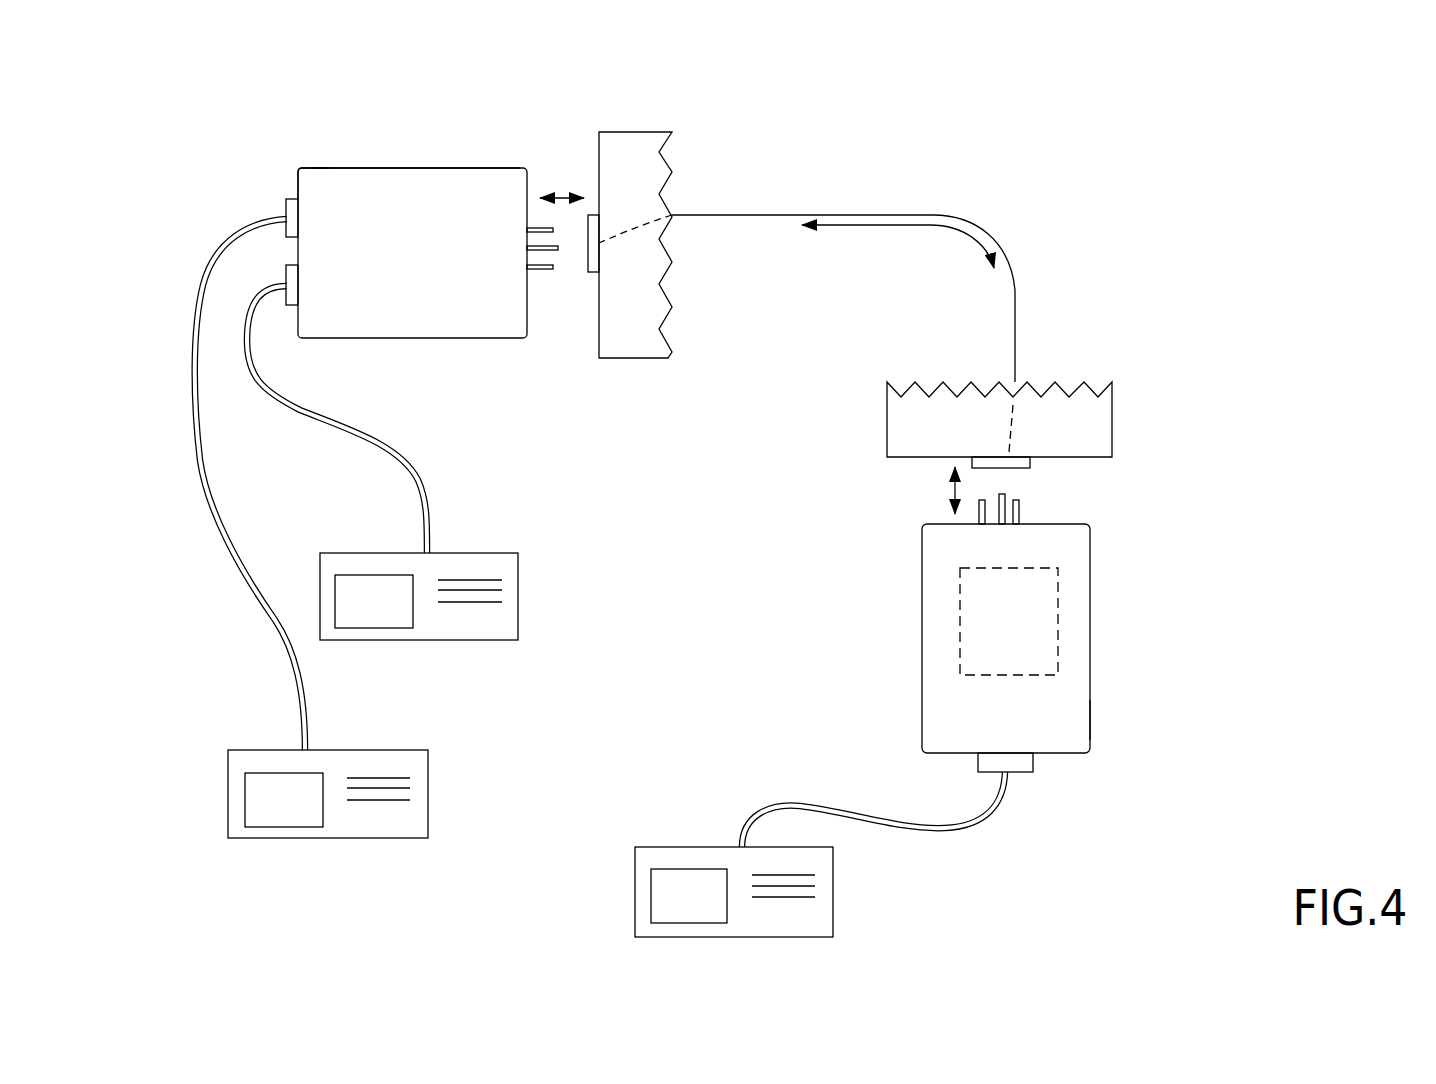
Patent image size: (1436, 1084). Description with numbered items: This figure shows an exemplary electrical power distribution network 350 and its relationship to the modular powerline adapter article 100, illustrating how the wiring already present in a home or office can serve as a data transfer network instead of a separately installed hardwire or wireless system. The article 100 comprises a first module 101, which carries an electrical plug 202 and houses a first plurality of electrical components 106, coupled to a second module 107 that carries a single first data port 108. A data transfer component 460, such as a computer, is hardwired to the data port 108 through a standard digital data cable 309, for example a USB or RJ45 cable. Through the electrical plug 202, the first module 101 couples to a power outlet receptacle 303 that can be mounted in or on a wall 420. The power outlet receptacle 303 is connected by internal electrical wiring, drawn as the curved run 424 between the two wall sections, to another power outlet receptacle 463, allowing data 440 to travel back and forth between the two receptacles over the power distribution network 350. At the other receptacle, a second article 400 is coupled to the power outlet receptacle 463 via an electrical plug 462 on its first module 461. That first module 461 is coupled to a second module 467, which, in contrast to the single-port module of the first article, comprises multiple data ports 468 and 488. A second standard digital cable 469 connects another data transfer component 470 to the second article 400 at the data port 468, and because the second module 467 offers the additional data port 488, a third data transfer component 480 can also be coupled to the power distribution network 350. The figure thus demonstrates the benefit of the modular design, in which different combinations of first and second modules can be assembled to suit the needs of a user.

The article 100 is at (1011, 679).
The first module 101 is at (1113, 576).
The first plurality of electrical components 106 is at (1058, 643).
The second module 107 is at (1117, 721).
The first data port 108 is at (1033, 772).
The electrical plug 202 is at (1020, 507).
The power outlet receptacle 303 is at (1030, 463).
The digital data cable 309 is at (932, 830).
The electrical power distribution network 350 is at (881, 262).
The second article 400 is at (396, 236).
The wall 420 is at (640, 158).
The guide path 424 is at (1000, 252).
The data 440 is at (832, 225).
The data transfer component 460 is at (846, 897).
The first module 461 is at (460, 168).
The electrical plug 462 is at (543, 270).
The power outlet receptacle 463 is at (590, 213).
The second module 467 is at (307, 167).
The data port 468 is at (270, 305).
The second standard digital cable 469 is at (420, 477).
The data transfer component 470 is at (455, 658).
The third data transfer component 480 is at (355, 854).
The data port 488 is at (286, 205).